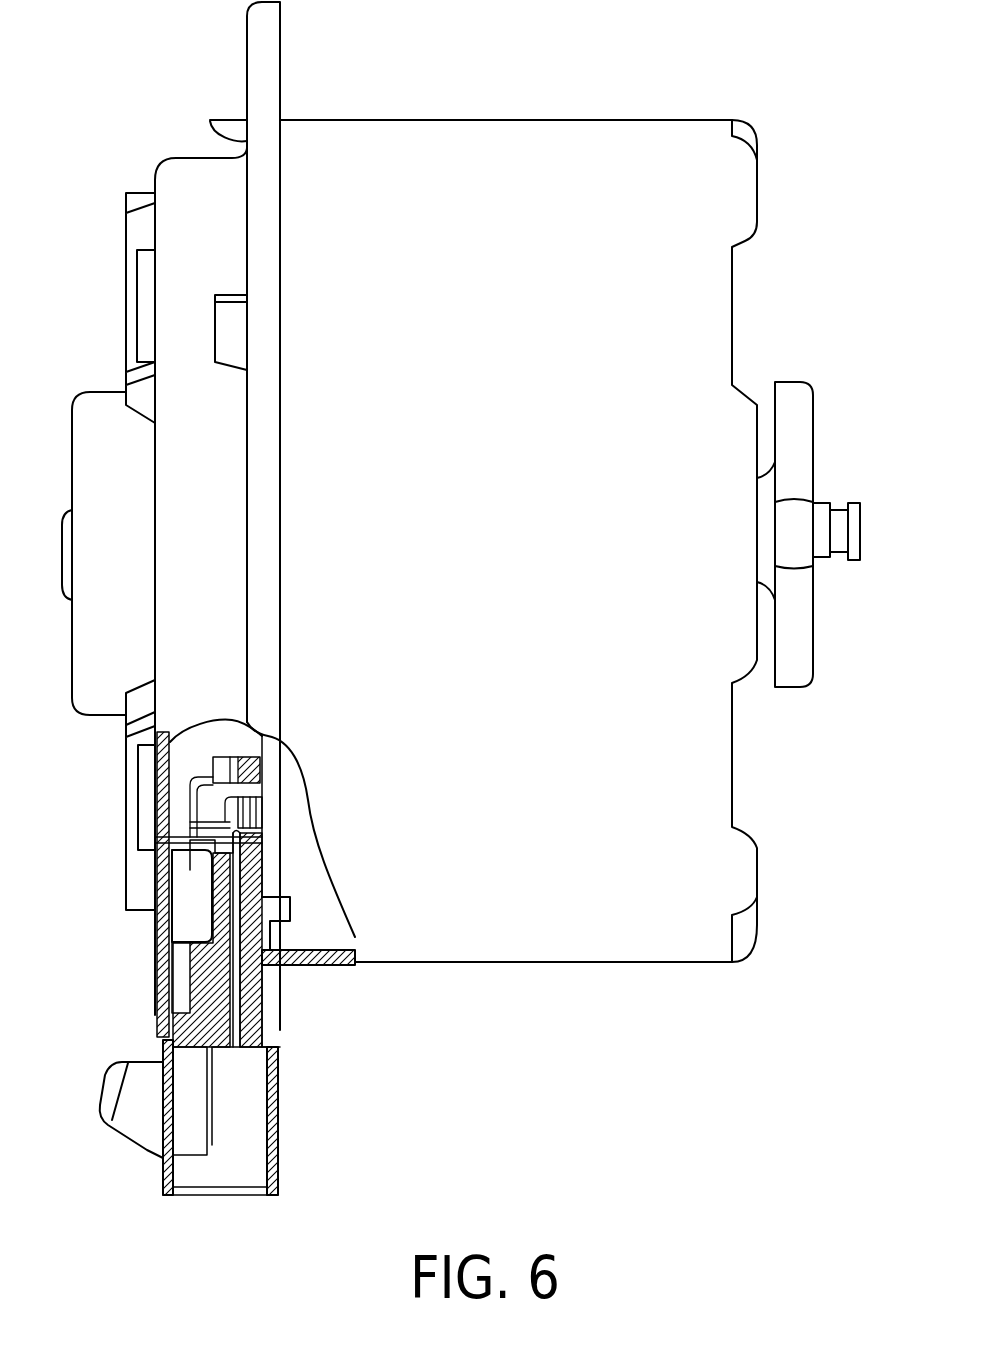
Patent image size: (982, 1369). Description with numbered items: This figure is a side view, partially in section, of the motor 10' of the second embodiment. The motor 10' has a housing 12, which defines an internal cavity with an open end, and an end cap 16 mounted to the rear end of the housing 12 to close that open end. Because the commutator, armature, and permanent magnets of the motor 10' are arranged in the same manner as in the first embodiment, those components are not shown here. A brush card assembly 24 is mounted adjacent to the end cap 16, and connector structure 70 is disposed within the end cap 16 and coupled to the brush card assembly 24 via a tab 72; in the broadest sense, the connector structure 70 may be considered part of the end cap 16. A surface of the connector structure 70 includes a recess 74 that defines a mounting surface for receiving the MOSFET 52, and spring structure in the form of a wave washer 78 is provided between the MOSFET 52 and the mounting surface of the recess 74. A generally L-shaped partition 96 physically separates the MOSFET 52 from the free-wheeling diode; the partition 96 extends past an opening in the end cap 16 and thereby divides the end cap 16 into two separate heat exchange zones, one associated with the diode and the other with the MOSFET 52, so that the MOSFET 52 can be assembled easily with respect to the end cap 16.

The motor 10' is at (493, 516).
The housing 12 is at (320, 963).
The end cap 16 is at (170, 708).
The brush card assembly 24 is at (265, 880).
The MOSFET 52 is at (187, 908).
The connector structure 70 is at (278, 1065).
The tab 72 is at (295, 920).
The recess 74 is at (180, 950).
The wave washer 78 is at (220, 850).
The partition 96 is at (155, 880).